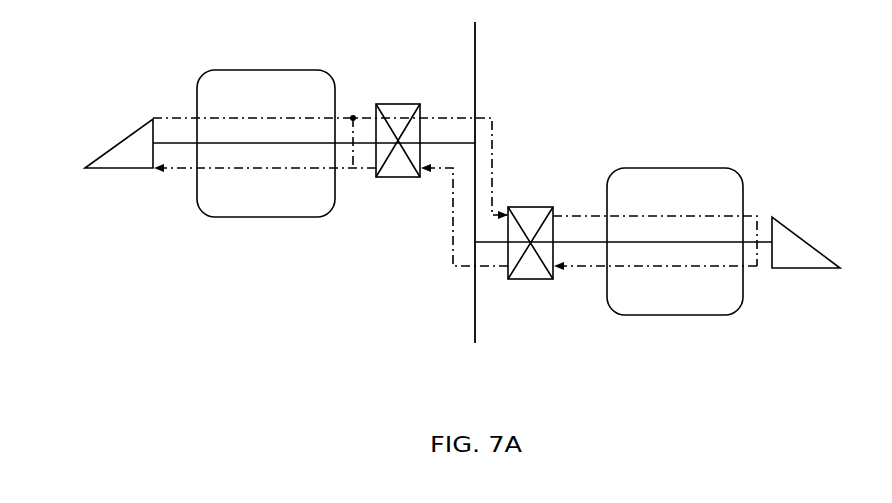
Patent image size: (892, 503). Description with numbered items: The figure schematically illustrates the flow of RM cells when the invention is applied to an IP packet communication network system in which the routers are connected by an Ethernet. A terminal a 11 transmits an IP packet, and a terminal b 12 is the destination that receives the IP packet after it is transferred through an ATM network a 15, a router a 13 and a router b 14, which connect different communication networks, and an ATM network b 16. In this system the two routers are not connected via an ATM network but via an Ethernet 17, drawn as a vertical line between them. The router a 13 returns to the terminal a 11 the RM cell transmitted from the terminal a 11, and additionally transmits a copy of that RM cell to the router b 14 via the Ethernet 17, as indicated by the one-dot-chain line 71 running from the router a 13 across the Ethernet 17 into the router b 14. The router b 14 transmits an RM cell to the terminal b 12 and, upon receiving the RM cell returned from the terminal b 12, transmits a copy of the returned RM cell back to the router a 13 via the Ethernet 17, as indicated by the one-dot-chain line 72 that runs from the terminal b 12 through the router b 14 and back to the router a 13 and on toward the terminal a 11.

The terminal a 11 is at (108, 140).
The terminal b 12 is at (814, 245).
The router a 13 is at (394, 104).
The router b 14 is at (550, 207).
The ATM network a 15 is at (250, 70).
The ATM network b 16 is at (672, 168).
The Ethernet 17 is at (475, 36).
The one-dot-chain line 71 is at (493, 128).
The one-dot-chain line 72 is at (453, 242).